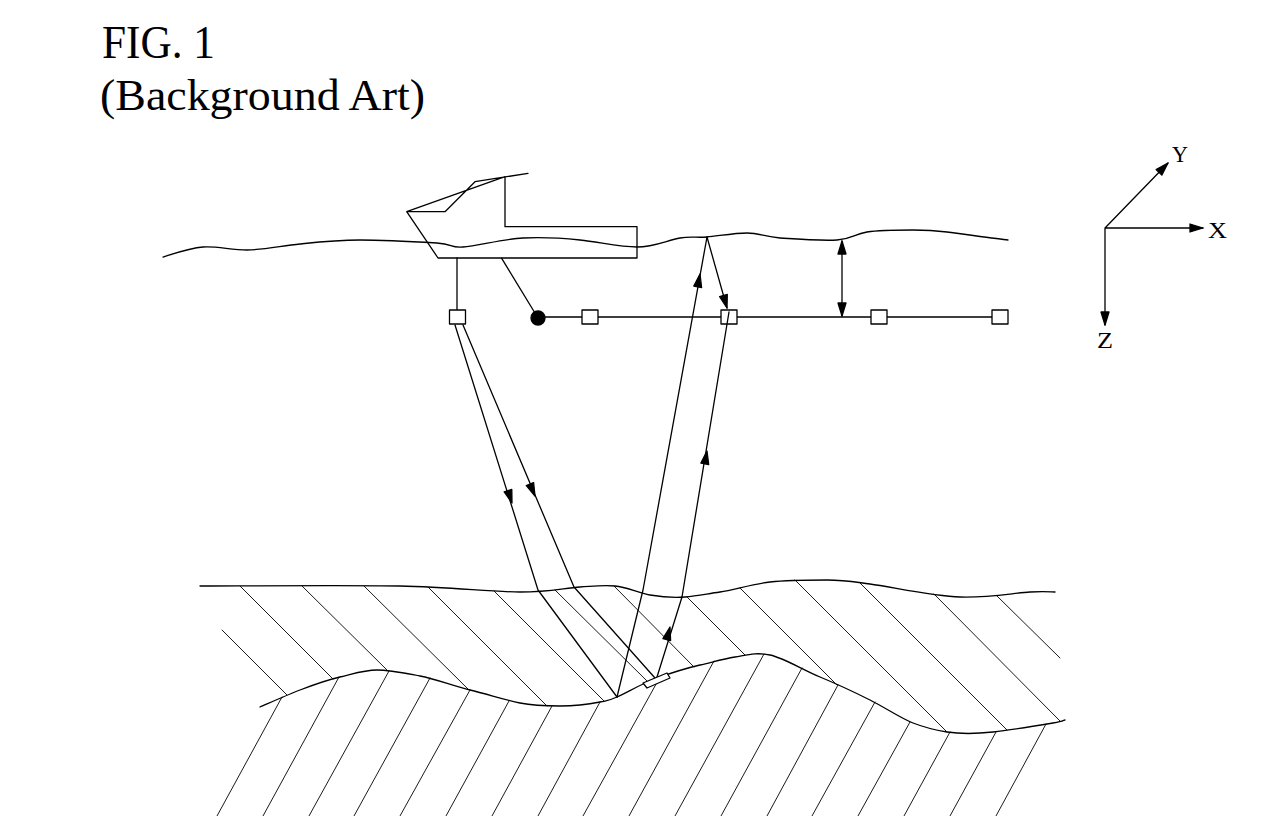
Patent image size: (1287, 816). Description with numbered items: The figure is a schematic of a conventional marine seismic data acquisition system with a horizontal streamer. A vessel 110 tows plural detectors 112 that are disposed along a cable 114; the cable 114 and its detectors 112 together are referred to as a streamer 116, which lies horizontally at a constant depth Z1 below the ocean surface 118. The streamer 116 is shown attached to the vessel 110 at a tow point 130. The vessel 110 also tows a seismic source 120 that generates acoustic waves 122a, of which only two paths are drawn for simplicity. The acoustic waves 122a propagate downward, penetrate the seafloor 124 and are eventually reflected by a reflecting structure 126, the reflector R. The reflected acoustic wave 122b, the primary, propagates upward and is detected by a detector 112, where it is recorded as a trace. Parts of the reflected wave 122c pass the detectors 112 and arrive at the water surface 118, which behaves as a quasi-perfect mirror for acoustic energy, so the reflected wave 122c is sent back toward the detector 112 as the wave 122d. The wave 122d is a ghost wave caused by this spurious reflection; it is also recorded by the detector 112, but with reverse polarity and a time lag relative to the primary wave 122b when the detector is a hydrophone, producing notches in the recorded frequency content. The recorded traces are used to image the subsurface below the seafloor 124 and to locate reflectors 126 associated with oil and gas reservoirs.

The vessel 110 is at (457, 208).
The detectors 112 is at (590, 325).
The cable 114 is at (570, 318).
The streamer 116 is at (762, 372).
The ocean surface 118 is at (747, 233).
The seismic source 120 is at (448, 317).
The acoustic waves 122a is at (517, 453).
The reflected acoustic wave 122b is at (693, 533).
The reflected wave 122c is at (664, 477).
The ghost wave 122d is at (717, 270).
The seafloor 124 is at (878, 582).
The reflecting structure 126 is at (917, 723).
The streamer tow point 130 is at (541, 309).
The reflector R is at (647, 688).
The depth Z1 is at (845, 275).